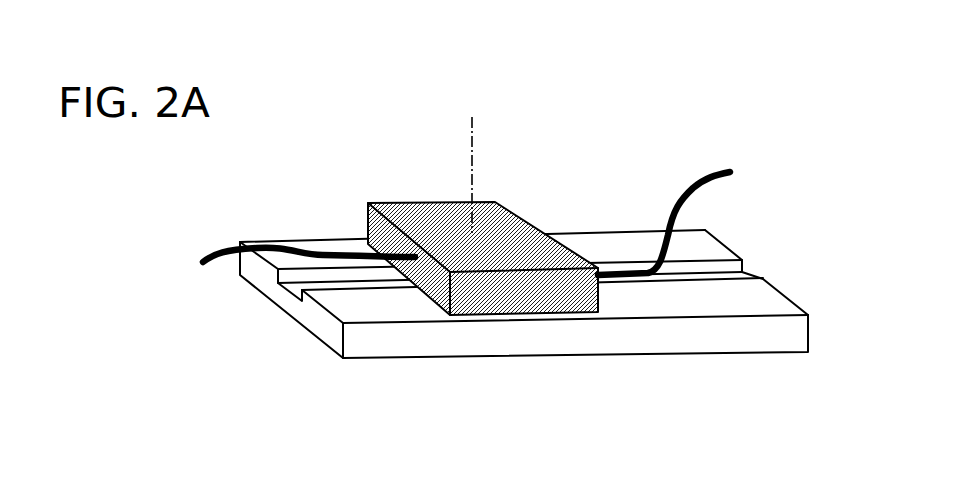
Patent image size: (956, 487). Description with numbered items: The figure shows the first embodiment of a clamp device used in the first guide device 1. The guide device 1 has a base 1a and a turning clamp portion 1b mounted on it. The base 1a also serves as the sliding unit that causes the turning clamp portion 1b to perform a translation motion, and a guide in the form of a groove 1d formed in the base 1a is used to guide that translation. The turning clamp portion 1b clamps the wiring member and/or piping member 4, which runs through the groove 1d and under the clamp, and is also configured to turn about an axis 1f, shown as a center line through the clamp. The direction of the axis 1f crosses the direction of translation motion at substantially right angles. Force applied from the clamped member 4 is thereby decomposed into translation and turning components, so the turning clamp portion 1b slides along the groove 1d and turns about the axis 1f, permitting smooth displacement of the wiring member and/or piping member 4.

The first guide device 1 is at (505, 201).
The base 1a is at (753, 300).
The turning clamp portion 1b is at (510, 216).
The groove 1d is at (297, 293).
The axis 1f is at (507, 116).
The wiring member and/or piping member 4 is at (683, 193).